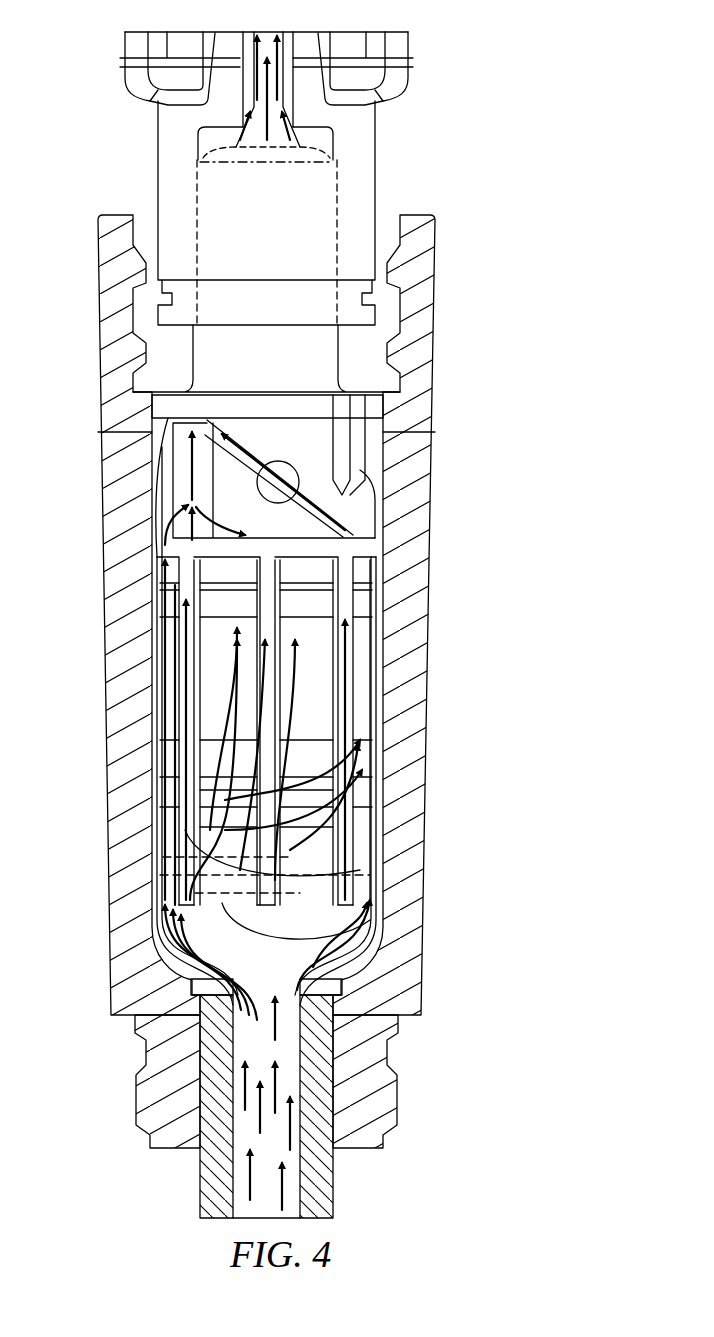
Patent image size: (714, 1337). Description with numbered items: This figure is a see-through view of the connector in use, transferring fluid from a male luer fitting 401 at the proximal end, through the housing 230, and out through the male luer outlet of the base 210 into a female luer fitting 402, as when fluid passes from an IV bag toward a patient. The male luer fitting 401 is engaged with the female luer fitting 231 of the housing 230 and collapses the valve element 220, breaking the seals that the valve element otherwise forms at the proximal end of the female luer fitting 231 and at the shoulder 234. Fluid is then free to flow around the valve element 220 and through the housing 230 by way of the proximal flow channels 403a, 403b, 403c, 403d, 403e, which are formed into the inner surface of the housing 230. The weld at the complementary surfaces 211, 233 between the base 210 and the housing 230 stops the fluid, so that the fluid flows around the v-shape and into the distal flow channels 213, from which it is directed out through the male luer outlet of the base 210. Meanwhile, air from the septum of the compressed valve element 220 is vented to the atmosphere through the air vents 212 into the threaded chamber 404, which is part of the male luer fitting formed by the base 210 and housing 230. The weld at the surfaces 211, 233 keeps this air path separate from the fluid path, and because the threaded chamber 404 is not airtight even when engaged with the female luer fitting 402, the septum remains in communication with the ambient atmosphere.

The base 210 is at (335, 180).
The complementary surface 211 is at (299, 480).
The air vent 212 is at (385, 437).
The distal flow channel 213 is at (182, 466).
The valve element 220 is at (315, 670).
The housing 230 is at (427, 807).
The female luer fitting 231 is at (440, 1020).
The complementary surface 233 is at (278, 482).
The shoulder 234 is at (365, 965).
The male luer fitting 401 is at (335, 1180).
The female luer fitting 402 is at (158, 170).
The proximal flow channel 403a is at (158, 752).
The proximal flow channel 403b is at (180, 602).
The proximal flow channel 403c is at (265, 645).
The proximal flow channel 403d is at (355, 708).
The proximal flow channel 403e is at (360, 748).
The threaded chamber 404 is at (383, 370).